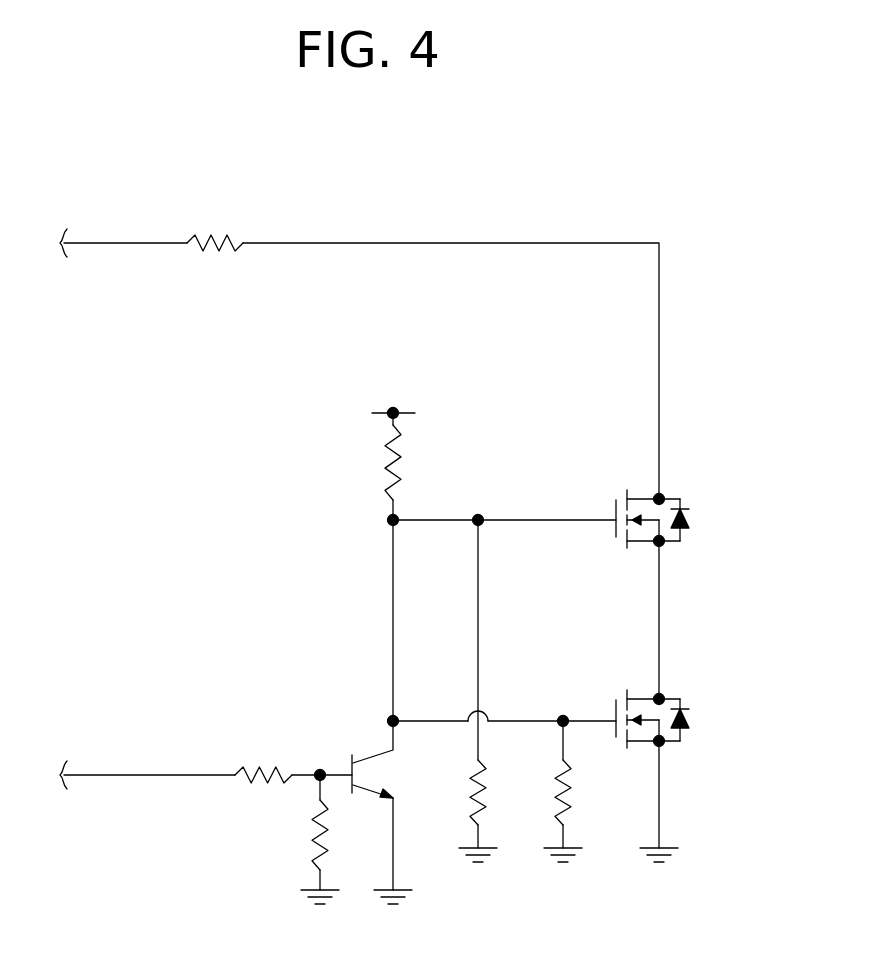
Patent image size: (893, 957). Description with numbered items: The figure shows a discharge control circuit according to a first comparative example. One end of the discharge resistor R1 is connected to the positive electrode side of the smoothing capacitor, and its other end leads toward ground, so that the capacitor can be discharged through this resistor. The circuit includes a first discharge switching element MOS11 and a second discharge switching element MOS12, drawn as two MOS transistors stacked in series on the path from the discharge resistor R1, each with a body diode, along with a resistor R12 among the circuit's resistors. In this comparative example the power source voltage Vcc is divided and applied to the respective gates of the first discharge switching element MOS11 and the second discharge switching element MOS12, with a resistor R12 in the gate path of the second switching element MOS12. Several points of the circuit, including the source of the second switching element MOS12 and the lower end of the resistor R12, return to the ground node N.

The discharge resistor R1 is at (215, 260).
The resistor R12 is at (587, 784).
The first discharge switching element MOS11 is at (685, 482).
The second discharge switching element MOS12 is at (685, 682).
The power source voltage Vcc is at (393, 399).
The ground node N is at (480, 881).